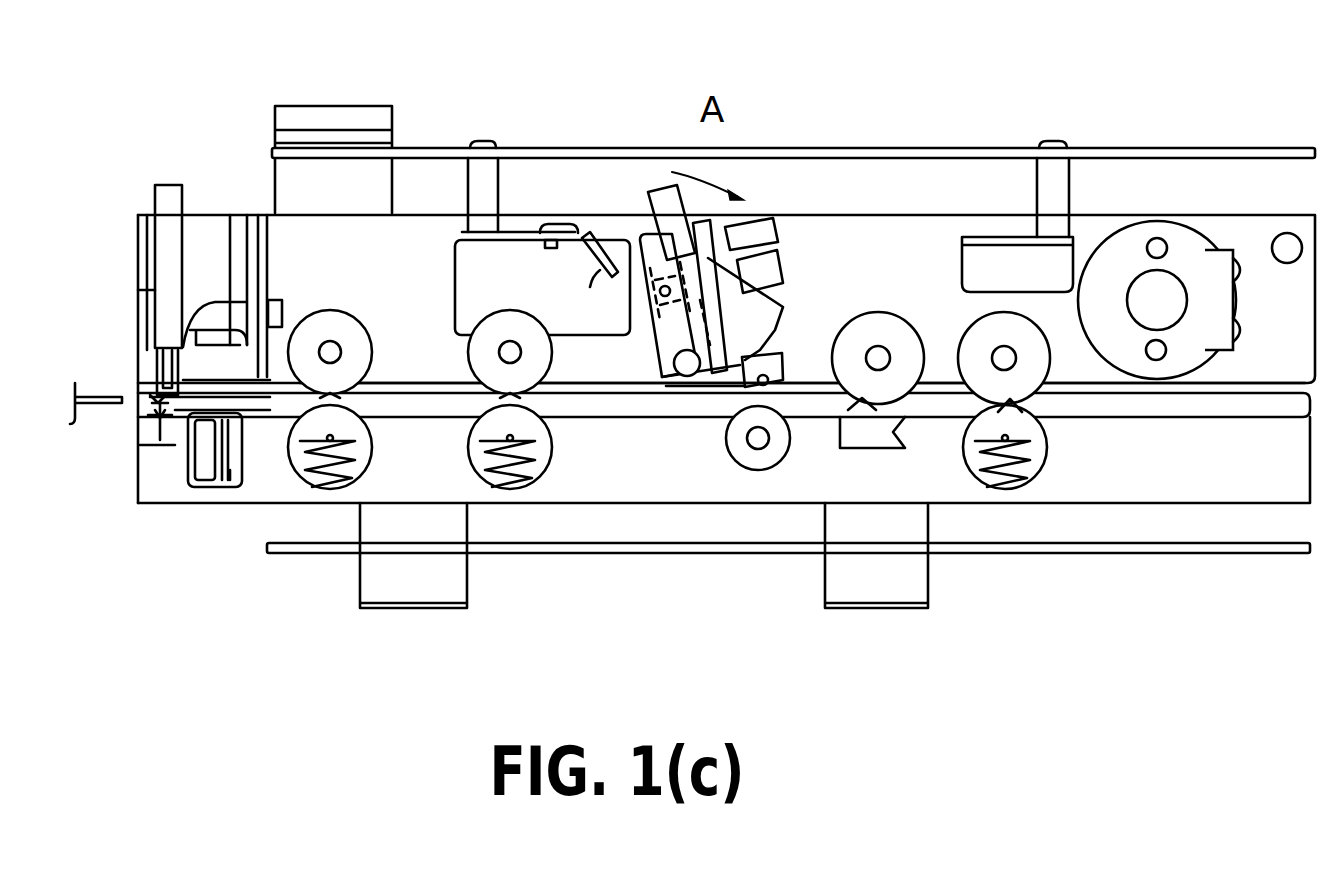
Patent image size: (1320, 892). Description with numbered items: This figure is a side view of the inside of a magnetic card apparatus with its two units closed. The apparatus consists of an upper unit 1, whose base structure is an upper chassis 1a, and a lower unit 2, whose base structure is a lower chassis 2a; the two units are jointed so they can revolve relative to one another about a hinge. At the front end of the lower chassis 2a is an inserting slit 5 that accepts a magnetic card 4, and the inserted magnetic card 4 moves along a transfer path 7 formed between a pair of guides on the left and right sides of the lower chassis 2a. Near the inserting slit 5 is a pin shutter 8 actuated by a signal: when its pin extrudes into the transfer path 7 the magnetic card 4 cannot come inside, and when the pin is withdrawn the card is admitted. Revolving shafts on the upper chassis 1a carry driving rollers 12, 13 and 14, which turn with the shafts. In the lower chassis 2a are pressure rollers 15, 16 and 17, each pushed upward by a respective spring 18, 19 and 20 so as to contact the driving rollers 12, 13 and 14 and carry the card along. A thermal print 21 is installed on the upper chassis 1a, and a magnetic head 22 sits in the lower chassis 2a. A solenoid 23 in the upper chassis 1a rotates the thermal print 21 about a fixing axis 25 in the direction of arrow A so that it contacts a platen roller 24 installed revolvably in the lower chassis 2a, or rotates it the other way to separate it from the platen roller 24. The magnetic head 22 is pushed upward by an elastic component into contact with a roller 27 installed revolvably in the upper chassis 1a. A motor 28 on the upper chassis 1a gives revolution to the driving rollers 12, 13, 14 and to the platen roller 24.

The upper unit 1 is at (565, 148).
The upper chassis 1a is at (910, 232).
The lower unit 2 is at (555, 557).
The lower chassis 2a is at (732, 487).
The magnetic card 4 is at (100, 410).
The inserting slit 5 is at (160, 400).
The transfer path 7 is at (617, 402).
The pin shutter 8 is at (238, 245).
The driving roller 12 is at (322, 327).
The driving roller 13 is at (493, 333).
The driving roller 14 is at (1005, 323).
The pressure roller 15 is at (300, 492).
The pressure roller 16 is at (545, 452).
The pressure roller 17 is at (1033, 455).
The spring 18 is at (330, 450).
The spring 19 is at (510, 450).
The spring 20 is at (1005, 452).
The thermal print 21 is at (763, 337).
The magnetic head 22 is at (893, 440).
The solenoid 23 is at (603, 272).
The platen roller 24 is at (762, 460).
The fixing axis 25 is at (690, 376).
The roller 27 is at (878, 327).
The motor 28 is at (1178, 240).